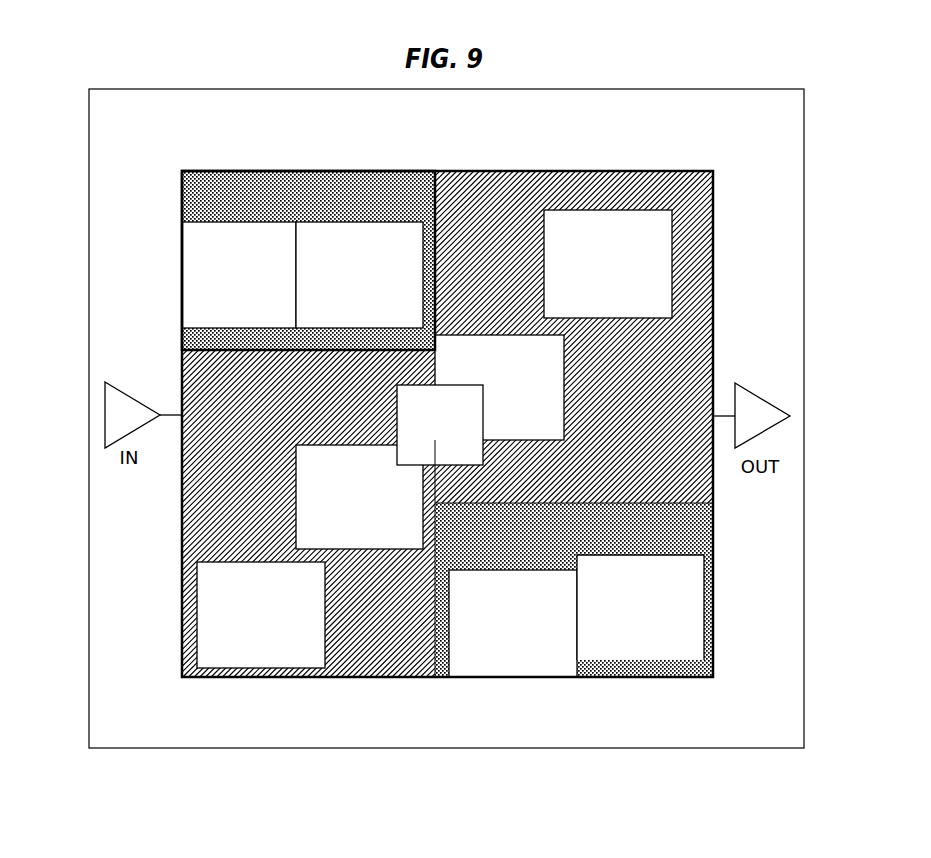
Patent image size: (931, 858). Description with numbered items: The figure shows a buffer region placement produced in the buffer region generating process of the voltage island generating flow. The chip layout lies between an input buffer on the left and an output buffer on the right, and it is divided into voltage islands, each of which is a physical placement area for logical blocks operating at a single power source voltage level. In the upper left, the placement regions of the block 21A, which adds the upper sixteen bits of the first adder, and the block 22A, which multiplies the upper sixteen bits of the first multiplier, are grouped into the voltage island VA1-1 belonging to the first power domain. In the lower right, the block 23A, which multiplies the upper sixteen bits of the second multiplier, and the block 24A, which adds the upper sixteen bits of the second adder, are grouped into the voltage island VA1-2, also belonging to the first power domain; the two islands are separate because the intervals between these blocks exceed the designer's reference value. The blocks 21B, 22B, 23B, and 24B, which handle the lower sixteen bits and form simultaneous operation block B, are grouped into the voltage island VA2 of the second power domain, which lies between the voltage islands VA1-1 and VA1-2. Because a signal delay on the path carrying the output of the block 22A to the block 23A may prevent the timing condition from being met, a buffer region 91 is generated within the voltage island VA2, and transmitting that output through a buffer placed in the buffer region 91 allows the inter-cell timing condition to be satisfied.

The block 21A is at (237, 230).
The block 22A is at (373, 230).
The block 21B is at (257, 653).
The block 22B is at (362, 537).
The block 23A is at (512, 665).
The block 23B is at (548, 372).
The block 24A is at (650, 655).
The block 24B is at (610, 228).
The buffer region 91 is at (420, 425).
The voltage island VA1-1 is at (297, 177).
The voltage island VA1-2 is at (690, 528).
The voltage island VA2 is at (500, 177).